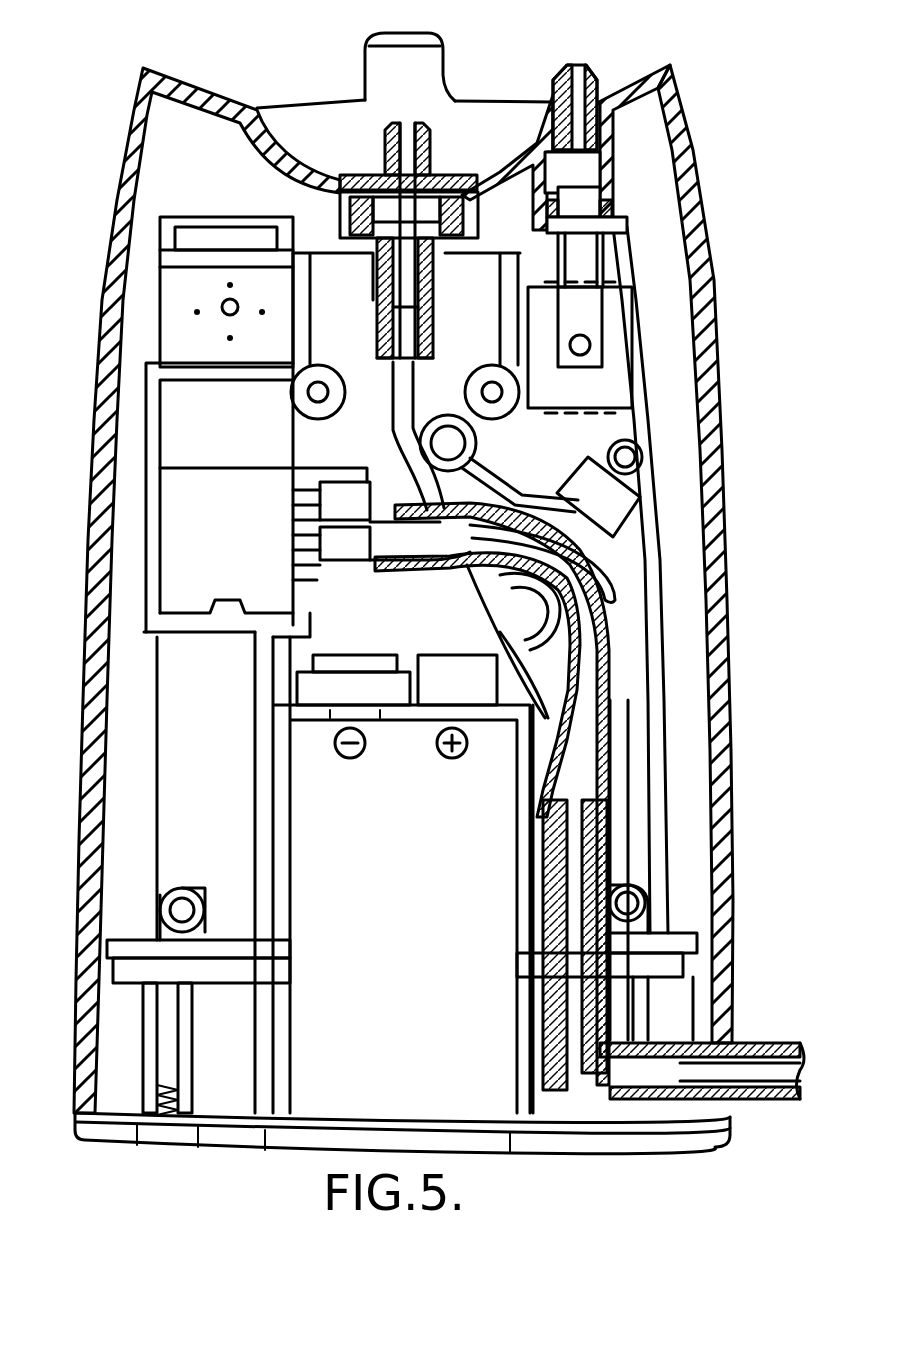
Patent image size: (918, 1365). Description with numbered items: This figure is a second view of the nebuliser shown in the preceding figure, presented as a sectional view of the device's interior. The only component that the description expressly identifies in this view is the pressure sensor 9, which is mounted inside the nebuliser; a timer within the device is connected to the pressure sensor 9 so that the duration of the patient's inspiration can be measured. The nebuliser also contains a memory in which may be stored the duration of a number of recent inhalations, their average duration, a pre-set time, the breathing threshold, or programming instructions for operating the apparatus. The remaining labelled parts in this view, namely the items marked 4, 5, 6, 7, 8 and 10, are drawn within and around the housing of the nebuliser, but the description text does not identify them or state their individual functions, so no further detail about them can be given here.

The housing 4 is at (693, 173).
The connecting cable 5 is at (762, 1085).
The connecting wire 6 is at (605, 640).
The connector of circuit board 7 is at (303, 489).
The connection nozzle 8 is at (380, 140).
The pressure sensor 9 is at (620, 334).
The connection piece 10 is at (578, 62).